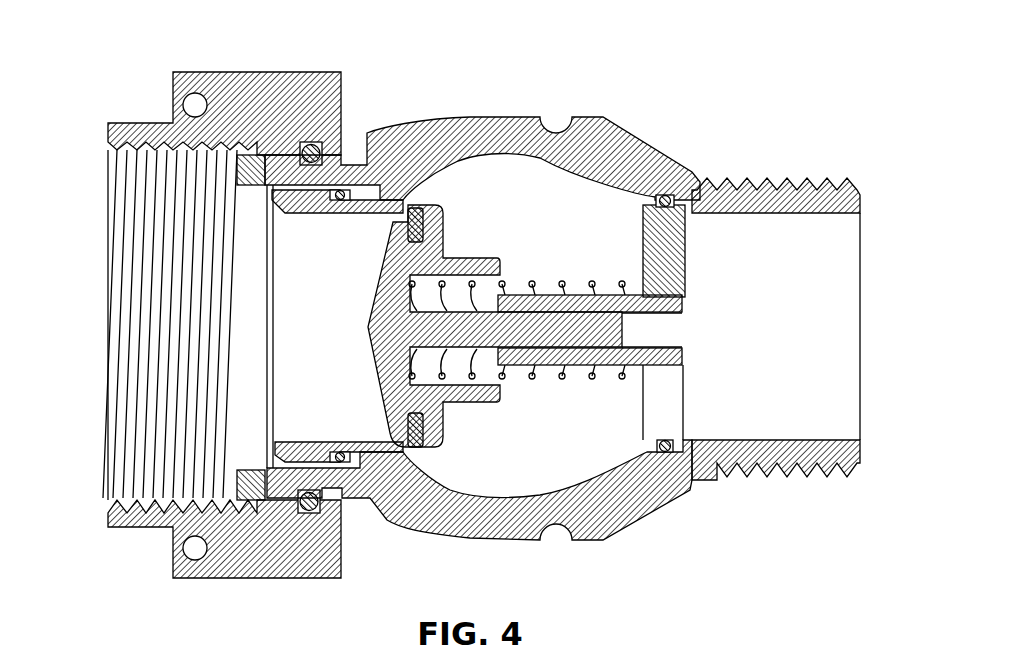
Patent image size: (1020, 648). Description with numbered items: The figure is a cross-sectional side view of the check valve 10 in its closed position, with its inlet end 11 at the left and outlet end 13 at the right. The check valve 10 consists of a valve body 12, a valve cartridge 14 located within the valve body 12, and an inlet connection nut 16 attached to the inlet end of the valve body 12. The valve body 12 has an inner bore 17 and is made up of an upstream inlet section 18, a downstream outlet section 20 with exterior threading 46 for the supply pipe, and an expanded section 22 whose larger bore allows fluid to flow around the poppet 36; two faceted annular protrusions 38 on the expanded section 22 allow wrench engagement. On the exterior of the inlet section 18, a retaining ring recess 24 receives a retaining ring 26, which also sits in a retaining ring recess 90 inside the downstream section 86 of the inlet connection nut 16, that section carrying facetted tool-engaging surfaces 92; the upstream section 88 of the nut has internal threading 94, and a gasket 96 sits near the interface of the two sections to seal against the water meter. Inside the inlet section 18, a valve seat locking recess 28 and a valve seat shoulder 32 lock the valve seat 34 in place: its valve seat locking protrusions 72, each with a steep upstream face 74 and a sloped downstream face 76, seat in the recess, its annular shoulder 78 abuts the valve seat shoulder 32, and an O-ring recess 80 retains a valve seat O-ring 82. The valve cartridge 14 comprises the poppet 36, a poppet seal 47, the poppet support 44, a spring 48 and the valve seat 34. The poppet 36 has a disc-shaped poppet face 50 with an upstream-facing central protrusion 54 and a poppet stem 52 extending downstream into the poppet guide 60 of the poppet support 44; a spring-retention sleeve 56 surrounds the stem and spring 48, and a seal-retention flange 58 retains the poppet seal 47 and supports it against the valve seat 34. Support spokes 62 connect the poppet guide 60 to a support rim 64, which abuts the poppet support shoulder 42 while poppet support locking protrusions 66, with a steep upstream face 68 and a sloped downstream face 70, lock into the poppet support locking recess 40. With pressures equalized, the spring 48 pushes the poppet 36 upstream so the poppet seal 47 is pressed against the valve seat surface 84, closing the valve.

The check valve 10 is at (780, 73).
The inlet end 11 is at (105, 138).
The valve body 12 is at (593, 549).
The outlet end 13 is at (862, 200).
The valve cartridge 14 is at (463, 418).
The inlet connection nut 16 is at (198, 600).
The inner bore 17 is at (838, 318).
The inlet section 18 is at (352, 506).
The outlet section 20 is at (781, 486).
The expanded section 22 is at (508, 552).
The retaining ring recess 24 is at (372, 130).
The retaining ring 26 is at (311, 143).
The valve seat locking recess 28 is at (288, 162).
The valve seat shoulder 32 is at (395, 198).
The valve seat 34 is at (345, 122).
The poppet 36 is at (451, 190).
The faceted annular protrusions 38 is at (540, 104).
The poppet support locking recess 40 is at (667, 178).
The poppet support shoulder 42 is at (692, 188).
The poppet support 44 is at (674, 196).
The exterior threading 46 is at (787, 177).
The poppet seal 47 is at (380, 235).
The spring 48 is at (577, 382).
The poppet face 50 is at (395, 250).
The poppet stem 52 is at (608, 330).
The central protrusion 54 is at (367, 330).
The spring-retention sleeve 56 is at (478, 258).
The seal-retention flange 58 is at (438, 228).
The poppet guide 60 is at (540, 295).
The support spokes 62 is at (686, 250).
The support rim 64 is at (652, 203).
The poppet support locking protrusions 66 is at (672, 447).
The steep upstream face 68 is at (652, 458).
The sloped downstream face 70 is at (690, 492).
The valve seat locking protrusions 72 is at (285, 442).
The steep upstream face 74 is at (250, 502).
The sloped downstream face 76 is at (300, 514).
The annular shoulder 78 is at (339, 213).
The O-ring recess 80 is at (310, 207).
The valve seat O-ring 82 is at (322, 213).
The valve seat surface 84 is at (410, 205).
The downstream section 86 is at (278, 56).
The upstream section 88 is at (141, 118).
The retaining ring recess 90 is at (322, 168).
The tool-engaging surfaces 92 is at (214, 70).
The internal threading 94 is at (240, 170).
The gasket 96 is at (252, 180).